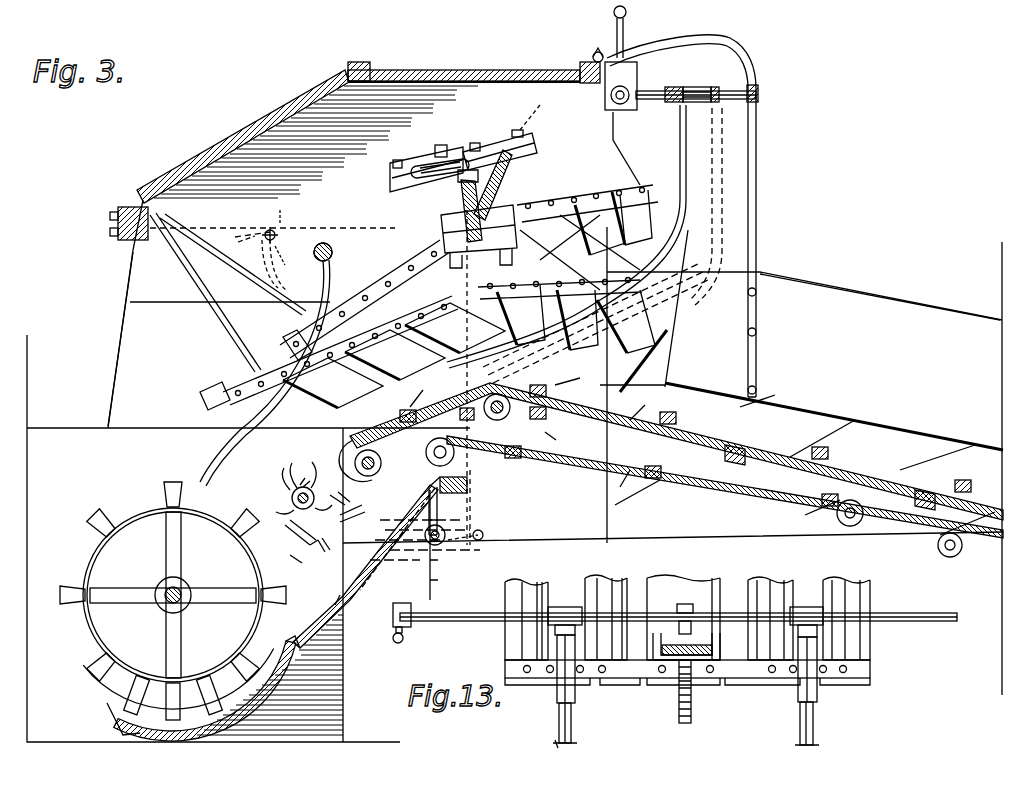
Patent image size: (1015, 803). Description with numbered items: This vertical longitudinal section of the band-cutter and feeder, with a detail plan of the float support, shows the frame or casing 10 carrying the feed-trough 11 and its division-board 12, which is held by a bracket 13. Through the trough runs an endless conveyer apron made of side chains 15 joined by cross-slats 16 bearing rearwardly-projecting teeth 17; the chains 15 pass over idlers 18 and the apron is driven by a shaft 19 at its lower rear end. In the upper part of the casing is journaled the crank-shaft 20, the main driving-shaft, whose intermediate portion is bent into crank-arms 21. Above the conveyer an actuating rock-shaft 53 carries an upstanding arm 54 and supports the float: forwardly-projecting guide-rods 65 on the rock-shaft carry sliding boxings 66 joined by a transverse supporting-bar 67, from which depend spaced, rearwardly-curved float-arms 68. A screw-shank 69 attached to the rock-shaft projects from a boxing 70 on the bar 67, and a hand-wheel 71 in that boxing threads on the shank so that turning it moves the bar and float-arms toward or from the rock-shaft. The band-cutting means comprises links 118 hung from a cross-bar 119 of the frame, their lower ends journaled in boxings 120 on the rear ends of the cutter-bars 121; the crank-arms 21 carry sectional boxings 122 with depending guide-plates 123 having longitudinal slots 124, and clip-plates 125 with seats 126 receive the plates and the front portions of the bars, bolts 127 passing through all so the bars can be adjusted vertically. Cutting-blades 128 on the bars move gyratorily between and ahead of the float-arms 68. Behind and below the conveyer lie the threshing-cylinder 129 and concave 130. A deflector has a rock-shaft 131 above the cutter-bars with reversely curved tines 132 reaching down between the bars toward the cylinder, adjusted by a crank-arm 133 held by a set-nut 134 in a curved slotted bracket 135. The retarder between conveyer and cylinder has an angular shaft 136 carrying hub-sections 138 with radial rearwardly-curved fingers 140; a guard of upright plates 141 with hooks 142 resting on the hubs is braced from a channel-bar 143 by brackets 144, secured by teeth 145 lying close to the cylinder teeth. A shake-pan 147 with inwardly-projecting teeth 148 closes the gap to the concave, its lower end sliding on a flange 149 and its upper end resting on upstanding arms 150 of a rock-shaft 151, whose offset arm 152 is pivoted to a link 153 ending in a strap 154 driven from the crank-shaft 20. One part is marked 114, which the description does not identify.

In FIG. 3, the frame or casing 10 is at (111, 339).
In FIG. 3, the feed-trough 11 is at (834, 420).
In FIG. 3, the division-board 12 is at (880, 323).
In FIG. 3, the bracket 13 is at (758, 230).
In FIG. 3, the side chains 15 is at (740, 490).
In FIG. 3, the cross-slats 16 is at (960, 480).
In FIG. 3, the teeth 17 is at (702, 456).
In FIG. 3, the idlers 18 is at (850, 526).
In FIG. 3, the shaft 19 is at (355, 460).
In FIG. 3, the crank-shaft 20 is at (478, 156).
In FIG. 3, the crank-arms 21 is at (540, 143).
In FIG. 3, the actuating rock-shaft 53 is at (608, 100).
In FIG. 13, the actuating rock-shaft 53 is at (466, 613).
In FIG. 3, the upstanding arm 54 is at (630, 30).
In FIG. 13, the upstanding arm 54 is at (391, 623).
In FIG. 3, the rods 65 is at (760, 92).
In FIG. 13, the rods 65 is at (830, 715).
In FIG. 3, the boxings 66 is at (700, 86).
In FIG. 13, the boxings 66 is at (816, 690).
In FIG. 3, the transverse supporting-bar 67 is at (672, 86).
In FIG. 13, the transverse supporting-bar 67 is at (740, 677).
In FIG. 3, the float-arms 68 is at (718, 262).
In FIG. 13, the float-arms 68 is at (868, 592).
In FIG. 13, the screw-shank 69 is at (678, 710).
In FIG. 13, the boxing 70 is at (655, 665).
In FIG. 13, the hand-wheel 71 is at (705, 660).
In FIG. 3, the bracket 114 is at (598, 52).
In FIG. 3, the links 118 is at (205, 270).
In FIG. 3, the cross-bar 119 is at (125, 242).
In FIG. 3, the boxings 120 is at (228, 380).
In FIG. 3, the cutter-bars 121 is at (212, 398).
In FIG. 3, the sectional boxings 122 is at (530, 160).
In FIG. 3, the guide-plates 123 is at (530, 208).
In FIG. 3, the longitudinal slots 124 is at (449, 236).
In FIG. 3, the clip-plates 125 is at (458, 377).
In FIG. 3, the seats 126 is at (660, 165).
In FIG. 3, the bolts 127 is at (505, 296).
In FIG. 3, the cutting-blades 128 is at (360, 390).
In FIG. 3, the threshing-cylinder 129 is at (150, 512).
In FIG. 3, the concave 130 is at (245, 712).
In FIG. 3, the rock-shaft 131 is at (332, 260).
In FIG. 3, the tines 132 is at (215, 470).
In FIG. 3, the crank-arm 133 is at (272, 258).
In FIG. 3, the set screw or nut 134 is at (285, 211).
In FIG. 3, the curved slotted bracket 135 is at (296, 270).
In FIG. 3, the angular shaft 136 is at (280, 488).
In FIG. 3, the hub-sections 138 is at (312, 492).
In FIG. 3, the fingers 140 is at (352, 500).
In FIG. 3, the upright plates 141 is at (295, 538).
In FIG. 3, the hooks 142 is at (290, 473).
In FIG. 3, the channel-bar 143 is at (366, 514).
In FIG. 3, the heel braces or brackets 144 is at (321, 554).
In FIG. 3, the teeth 145 is at (287, 569).
In FIG. 3, the shake-pan 147 is at (405, 582).
In FIG. 3, the teeth 148 is at (322, 597).
In FIG. 3, the flange 149 is at (340, 650).
In FIG. 3, the upstanding arms 150 is at (448, 506).
In FIG. 3, the rock-shaft 151 is at (440, 544).
In FIG. 3, the offset arm 152 is at (482, 540).
In FIG. 3, the link 153 is at (478, 495).
In FIG. 3, the strap 154 is at (537, 111).